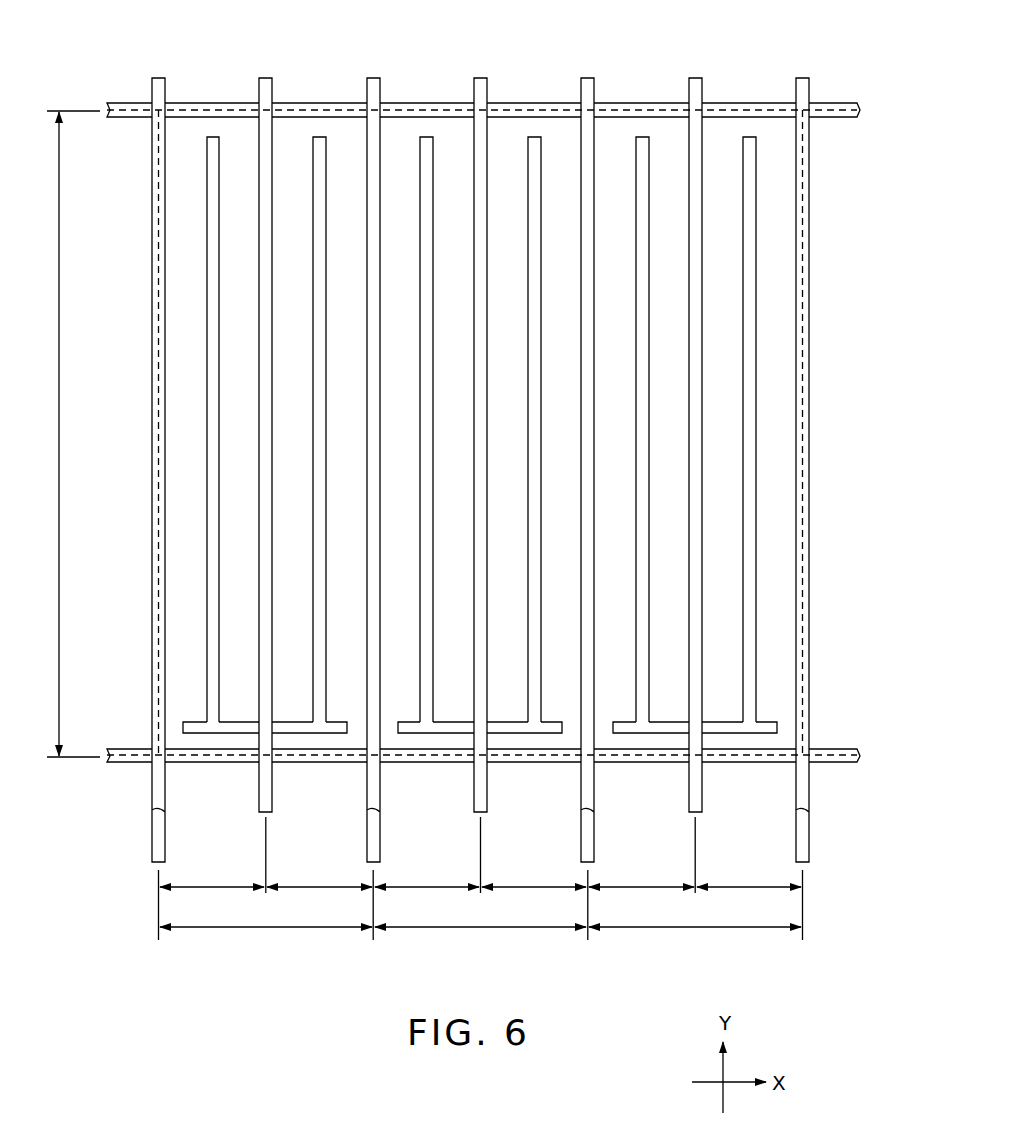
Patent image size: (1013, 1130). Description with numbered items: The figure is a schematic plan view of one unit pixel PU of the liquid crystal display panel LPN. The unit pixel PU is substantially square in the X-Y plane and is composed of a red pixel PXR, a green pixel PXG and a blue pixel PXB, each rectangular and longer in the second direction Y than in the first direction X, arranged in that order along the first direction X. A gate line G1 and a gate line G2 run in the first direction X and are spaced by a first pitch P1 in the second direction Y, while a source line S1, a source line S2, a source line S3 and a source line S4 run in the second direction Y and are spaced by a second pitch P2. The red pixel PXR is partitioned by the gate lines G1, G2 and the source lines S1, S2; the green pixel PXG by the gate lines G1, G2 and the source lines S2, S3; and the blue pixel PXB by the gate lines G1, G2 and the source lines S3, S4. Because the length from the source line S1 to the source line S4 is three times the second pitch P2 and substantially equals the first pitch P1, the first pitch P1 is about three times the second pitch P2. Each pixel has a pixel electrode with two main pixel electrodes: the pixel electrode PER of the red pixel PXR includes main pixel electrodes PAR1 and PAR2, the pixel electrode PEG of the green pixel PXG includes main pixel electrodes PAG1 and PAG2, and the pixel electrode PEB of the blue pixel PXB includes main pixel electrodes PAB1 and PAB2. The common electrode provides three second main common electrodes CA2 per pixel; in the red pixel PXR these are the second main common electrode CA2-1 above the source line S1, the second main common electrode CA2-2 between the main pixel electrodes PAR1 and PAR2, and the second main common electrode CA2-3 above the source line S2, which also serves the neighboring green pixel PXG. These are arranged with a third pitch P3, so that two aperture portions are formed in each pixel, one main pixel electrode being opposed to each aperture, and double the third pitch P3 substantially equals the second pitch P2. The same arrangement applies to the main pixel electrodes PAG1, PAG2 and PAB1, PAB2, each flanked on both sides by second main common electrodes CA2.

The liquid crystal display panel LPN is at (118, 834).
The gate line G1 is at (840, 120).
The gate line G2 is at (840, 749).
The source line S1 is at (165, 840).
The source line S2 is at (380, 840).
The source line S3 is at (594, 840).
The source line S4 is at (809, 840).
The second main common electrode CA2 is at (158, 77).
The second main common electrode CA2-1 is at (152, 382).
The second main common electrode CA2-2 is at (258, 478).
The second main common electrode CA2-3 is at (367, 508).
The unit pixel PU is at (808, 283).
The red pixel PXR is at (172, 190).
The green pixel PXG is at (511, 128).
The blue pixel PXB is at (727, 128).
The pixel electrode PER is at (214, 128).
The pixel electrode PEG is at (429, 128).
The pixel electrode PEB is at (644, 128).
The main pixel electrode PAR1 is at (210, 287).
The main pixel electrode PAR2 is at (312, 330).
The main pixel electrode PAG1 is at (422, 606).
The main pixel electrode PAG2 is at (532, 468).
The main pixel electrode PAB1 is at (643, 410).
The main pixel electrode PAB2 is at (750, 340).
The first pitch P1 is at (66, 434).
The second pitch P2 is at (480, 912).
The third pitch P3 is at (481, 878).